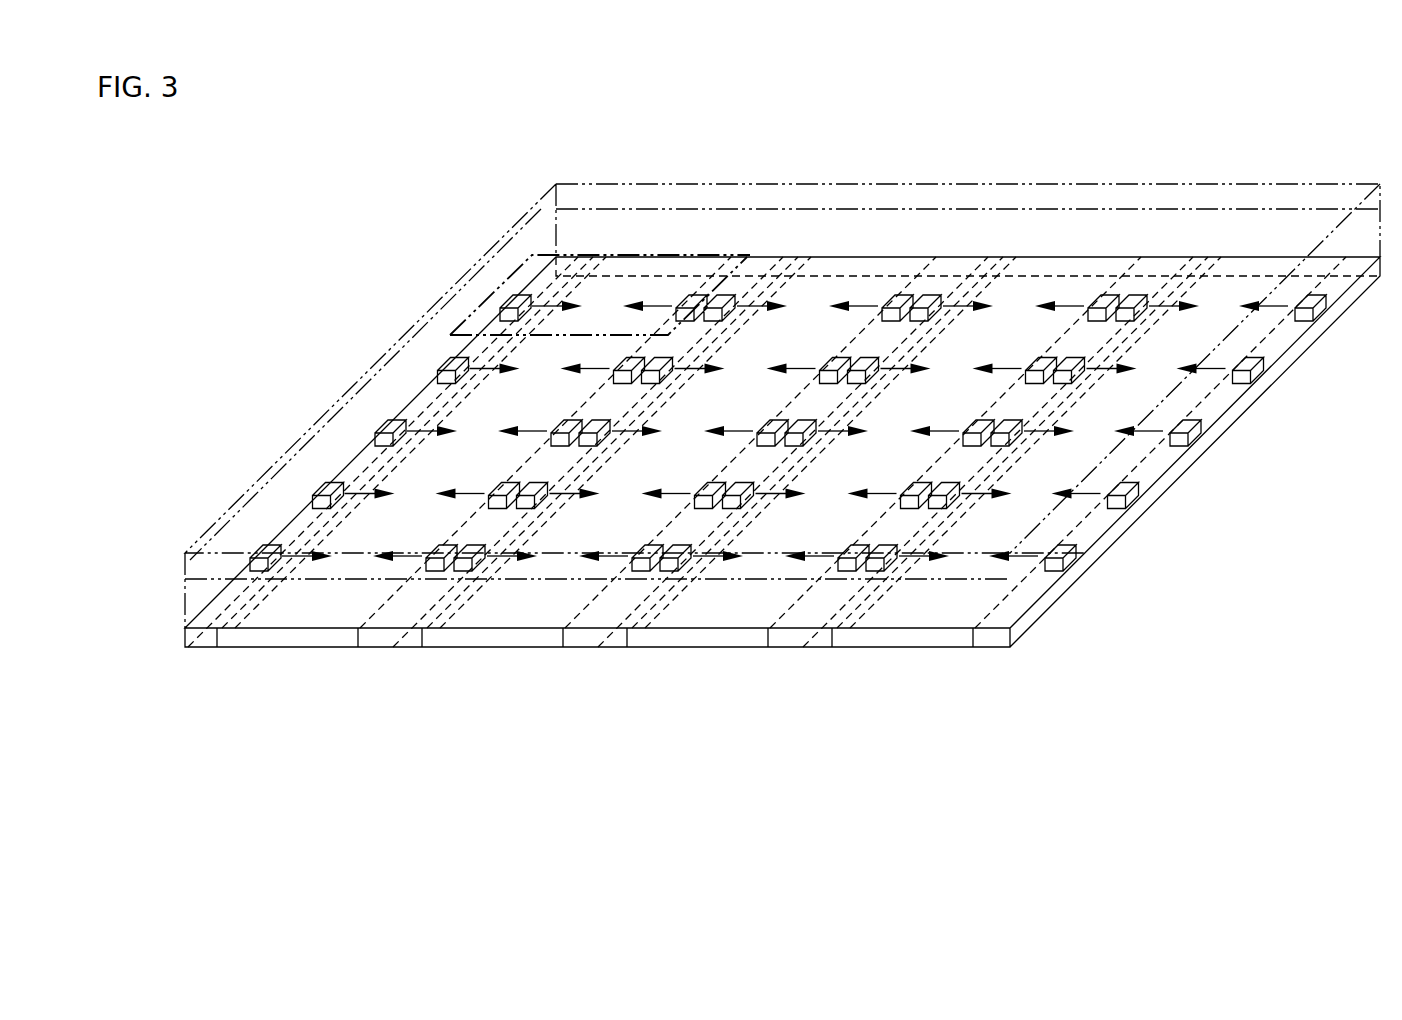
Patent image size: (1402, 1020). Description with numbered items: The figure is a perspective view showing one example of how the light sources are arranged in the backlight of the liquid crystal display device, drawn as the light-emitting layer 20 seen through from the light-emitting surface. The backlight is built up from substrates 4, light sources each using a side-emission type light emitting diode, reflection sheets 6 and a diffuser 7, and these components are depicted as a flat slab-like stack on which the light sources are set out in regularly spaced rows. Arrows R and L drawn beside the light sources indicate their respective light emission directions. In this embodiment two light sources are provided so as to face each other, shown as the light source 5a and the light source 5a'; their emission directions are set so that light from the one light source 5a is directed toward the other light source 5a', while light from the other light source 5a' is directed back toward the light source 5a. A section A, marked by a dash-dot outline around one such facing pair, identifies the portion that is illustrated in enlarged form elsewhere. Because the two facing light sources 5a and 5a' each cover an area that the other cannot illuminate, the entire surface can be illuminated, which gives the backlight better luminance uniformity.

The substrate 4 is at (1000, 640).
The reflection sheet 6 is at (905, 640).
The diffuser 7 is at (185, 566).
The light-emitting layer 20 is at (176, 603).
The light source 5a is at (489, 263).
The light source 5a' is at (711, 229).
The section A is at (468, 314).
The arrow R is at (563, 299).
The arrow L is at (647, 299).